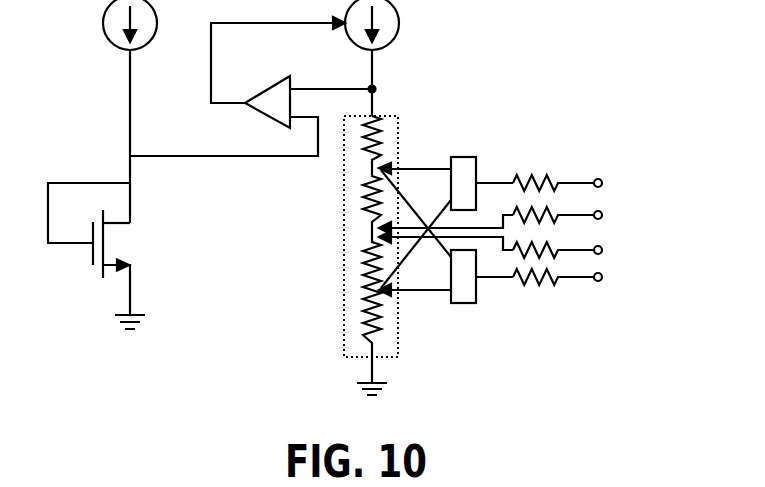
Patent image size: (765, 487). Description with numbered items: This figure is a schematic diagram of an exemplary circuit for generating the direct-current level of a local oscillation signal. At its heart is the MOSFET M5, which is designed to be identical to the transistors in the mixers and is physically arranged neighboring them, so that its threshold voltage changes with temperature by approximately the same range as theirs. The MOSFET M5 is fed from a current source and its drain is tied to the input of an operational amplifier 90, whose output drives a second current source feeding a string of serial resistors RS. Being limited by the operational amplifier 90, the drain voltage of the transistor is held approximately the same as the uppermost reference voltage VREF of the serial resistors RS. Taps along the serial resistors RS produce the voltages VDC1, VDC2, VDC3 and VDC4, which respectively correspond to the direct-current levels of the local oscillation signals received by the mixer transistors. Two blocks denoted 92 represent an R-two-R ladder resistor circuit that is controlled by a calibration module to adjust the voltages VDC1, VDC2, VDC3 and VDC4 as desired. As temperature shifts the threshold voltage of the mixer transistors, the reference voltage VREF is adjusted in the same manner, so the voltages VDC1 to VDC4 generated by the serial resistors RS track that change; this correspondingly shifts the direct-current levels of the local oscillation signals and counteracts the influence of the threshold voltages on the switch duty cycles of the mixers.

The operational amplifier 90 is at (275, 85).
The R-2R resistor circuit 92 is at (465, 157).
The MOSFET M5 is at (103, 256).
The serial resistors RS is at (344, 227).
The uppermost reference voltage VREF is at (397, 90).
The voltage VDC1 is at (585, 183).
The voltage VDC2 is at (585, 215).
The voltage VDC3 is at (585, 250).
The voltage VDC4 is at (585, 277).